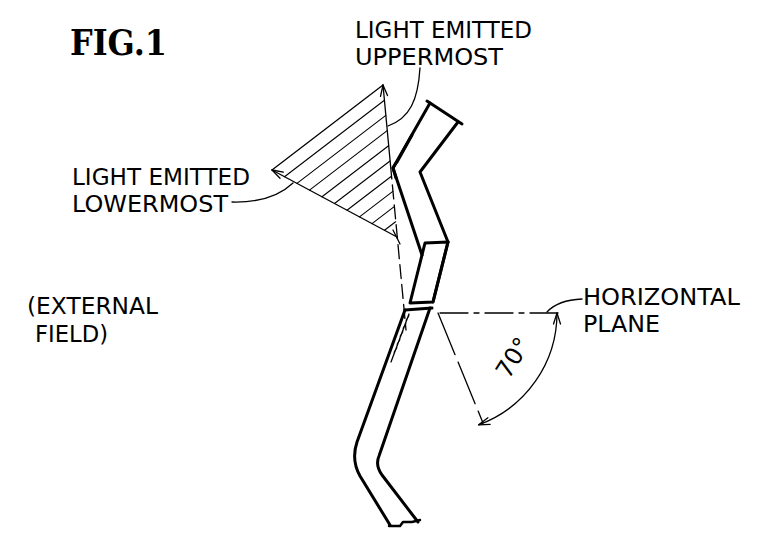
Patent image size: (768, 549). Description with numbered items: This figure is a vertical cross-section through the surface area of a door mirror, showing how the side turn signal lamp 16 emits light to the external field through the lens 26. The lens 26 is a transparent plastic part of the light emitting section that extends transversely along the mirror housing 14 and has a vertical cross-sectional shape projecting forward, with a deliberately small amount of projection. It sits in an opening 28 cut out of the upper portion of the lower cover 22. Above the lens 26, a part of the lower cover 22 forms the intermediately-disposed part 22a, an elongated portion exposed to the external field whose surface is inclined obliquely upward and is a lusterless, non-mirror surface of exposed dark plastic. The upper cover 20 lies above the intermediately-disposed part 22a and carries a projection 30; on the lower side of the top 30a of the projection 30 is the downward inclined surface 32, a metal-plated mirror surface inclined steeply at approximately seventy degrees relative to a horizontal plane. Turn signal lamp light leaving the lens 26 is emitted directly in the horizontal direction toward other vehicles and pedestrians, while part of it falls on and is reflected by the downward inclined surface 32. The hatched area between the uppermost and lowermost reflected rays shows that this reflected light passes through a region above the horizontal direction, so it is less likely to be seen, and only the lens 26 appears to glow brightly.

The mirror housing 14 is at (330, 240).
The side turn signal lamp 16 is at (337, 423).
The upper cover 20 is at (440, 148).
The lower cover 22 is at (446, 264).
The intermediately-disposed part 22a is at (433, 278).
The lens 26 is at (397, 493).
The opening 28 is at (410, 313).
The projection 30 is at (402, 138).
The top of the projection 30a is at (392, 172).
The downward inclined surface 32 is at (396, 233).